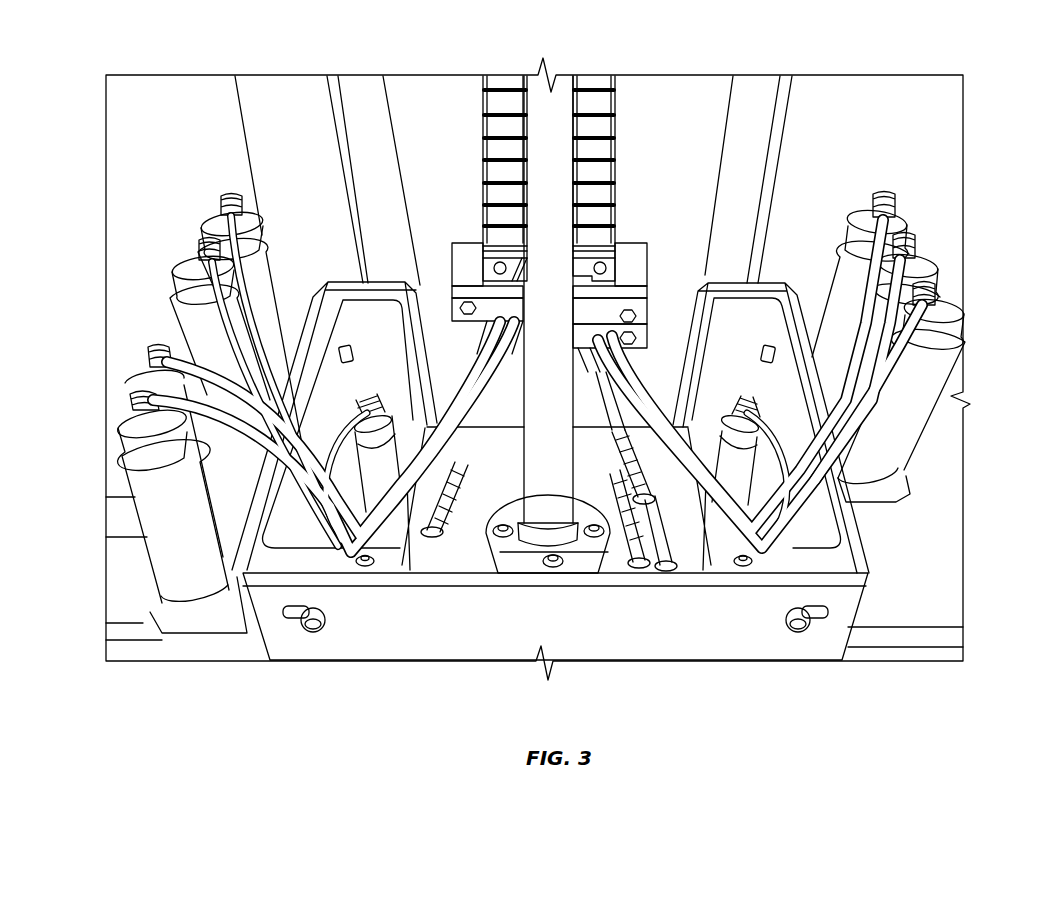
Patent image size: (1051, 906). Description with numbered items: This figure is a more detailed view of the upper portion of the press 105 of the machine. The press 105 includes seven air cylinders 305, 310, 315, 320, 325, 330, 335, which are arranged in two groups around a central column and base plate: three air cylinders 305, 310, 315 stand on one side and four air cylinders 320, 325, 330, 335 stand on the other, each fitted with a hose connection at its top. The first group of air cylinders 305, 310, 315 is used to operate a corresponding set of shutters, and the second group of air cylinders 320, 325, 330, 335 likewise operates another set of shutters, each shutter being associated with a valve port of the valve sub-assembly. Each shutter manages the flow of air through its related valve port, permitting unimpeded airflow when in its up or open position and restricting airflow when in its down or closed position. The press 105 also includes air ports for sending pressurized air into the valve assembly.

The press 105 is at (638, 61).
The air cylinder 305 is at (903, 228).
The air cylinder 310 is at (912, 276).
The air cylinder 315 is at (935, 314).
The air cylinder 320 is at (130, 407).
The air cylinder 325 is at (147, 371).
The air cylinder 330 is at (202, 262).
The air cylinder 335 is at (224, 218).